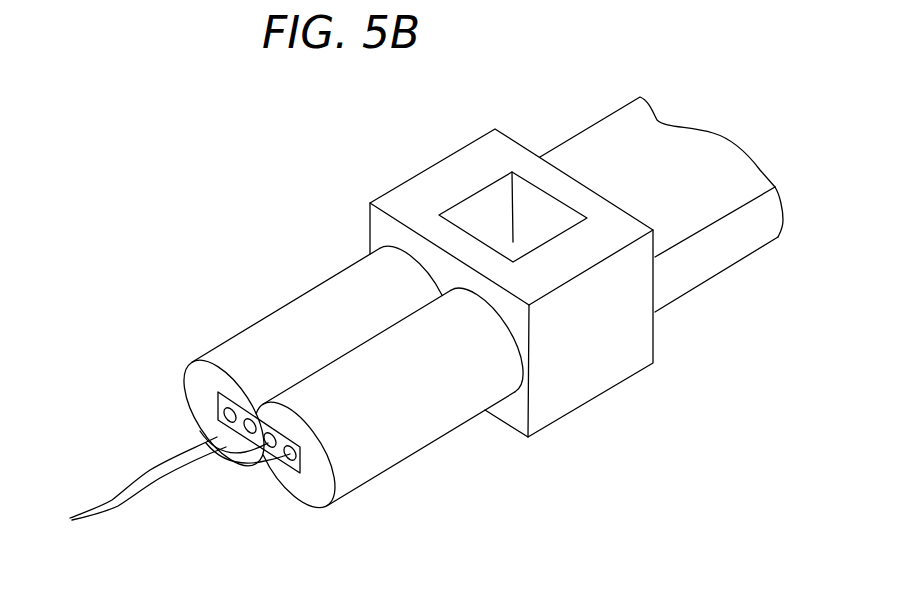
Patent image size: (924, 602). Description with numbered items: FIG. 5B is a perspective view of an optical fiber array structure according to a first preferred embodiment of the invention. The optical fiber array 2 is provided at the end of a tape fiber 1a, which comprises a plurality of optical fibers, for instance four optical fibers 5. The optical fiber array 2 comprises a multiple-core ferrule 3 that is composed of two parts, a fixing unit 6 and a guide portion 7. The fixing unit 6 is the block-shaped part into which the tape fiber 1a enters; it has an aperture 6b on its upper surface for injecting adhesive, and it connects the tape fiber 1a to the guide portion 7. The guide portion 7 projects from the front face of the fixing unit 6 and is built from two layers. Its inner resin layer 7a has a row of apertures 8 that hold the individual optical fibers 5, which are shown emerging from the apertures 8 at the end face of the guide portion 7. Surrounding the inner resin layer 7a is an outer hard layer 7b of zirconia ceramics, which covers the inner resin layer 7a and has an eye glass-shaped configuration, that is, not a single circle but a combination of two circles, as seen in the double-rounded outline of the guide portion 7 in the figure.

The tape fiber 1a is at (615, 132).
The optical fiber array 2 is at (180, 137).
The multiple-core ferrule 3 is at (722, 440).
The optical fiber 5 is at (171, 507).
The fixing unit 6 is at (575, 387).
The aperture for injecting adhesive 6b is at (473, 213).
The guide portion 7 is at (445, 418).
The inner resin layer 7a is at (217, 406).
The outer hard layer 7b is at (186, 376).
The aperture 8 is at (283, 466).